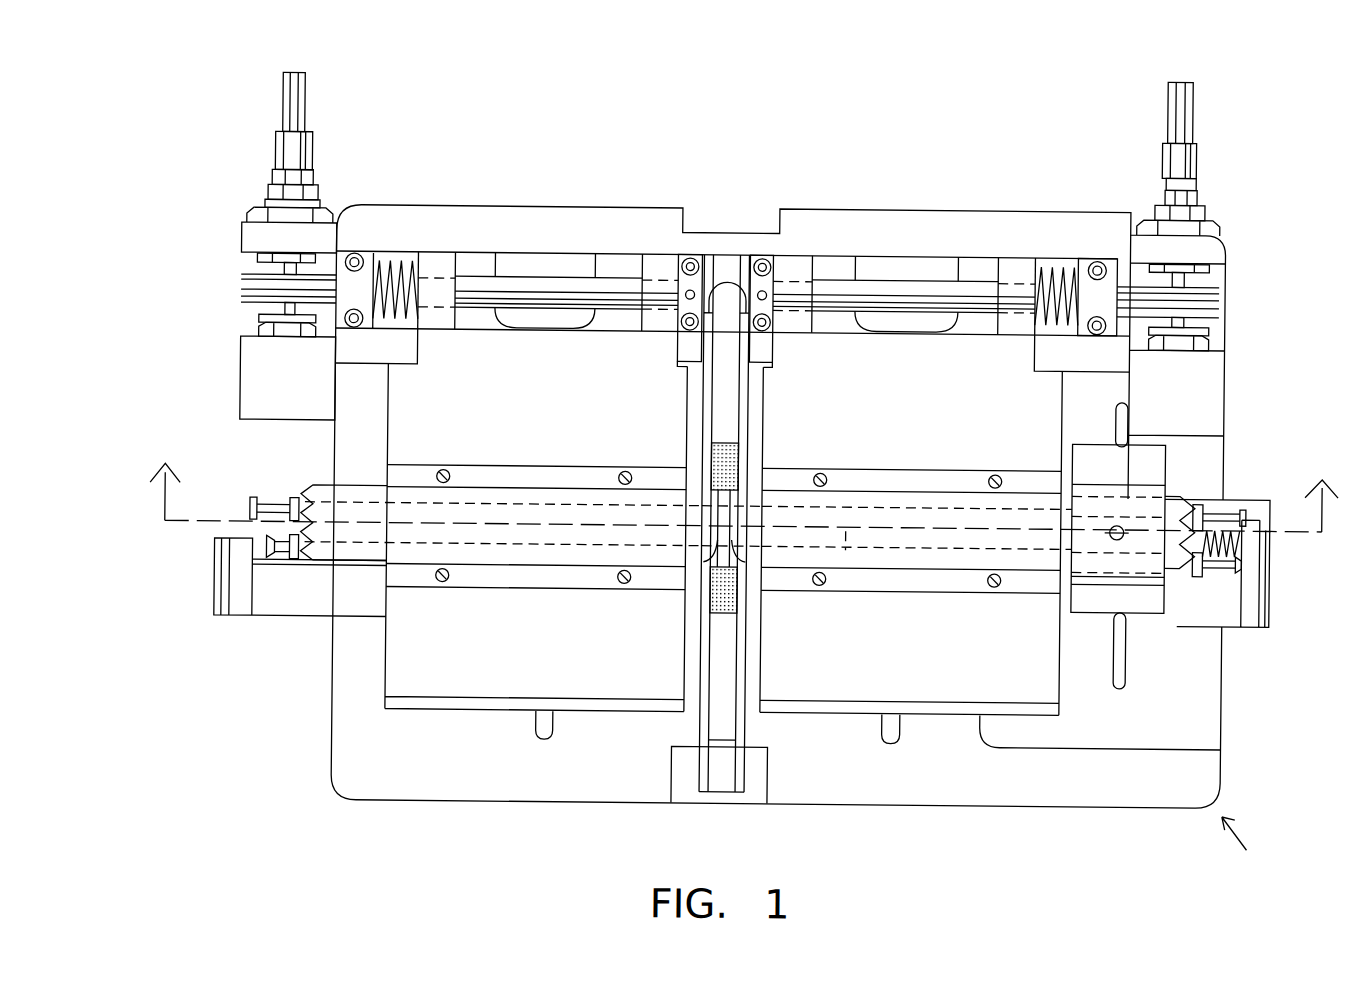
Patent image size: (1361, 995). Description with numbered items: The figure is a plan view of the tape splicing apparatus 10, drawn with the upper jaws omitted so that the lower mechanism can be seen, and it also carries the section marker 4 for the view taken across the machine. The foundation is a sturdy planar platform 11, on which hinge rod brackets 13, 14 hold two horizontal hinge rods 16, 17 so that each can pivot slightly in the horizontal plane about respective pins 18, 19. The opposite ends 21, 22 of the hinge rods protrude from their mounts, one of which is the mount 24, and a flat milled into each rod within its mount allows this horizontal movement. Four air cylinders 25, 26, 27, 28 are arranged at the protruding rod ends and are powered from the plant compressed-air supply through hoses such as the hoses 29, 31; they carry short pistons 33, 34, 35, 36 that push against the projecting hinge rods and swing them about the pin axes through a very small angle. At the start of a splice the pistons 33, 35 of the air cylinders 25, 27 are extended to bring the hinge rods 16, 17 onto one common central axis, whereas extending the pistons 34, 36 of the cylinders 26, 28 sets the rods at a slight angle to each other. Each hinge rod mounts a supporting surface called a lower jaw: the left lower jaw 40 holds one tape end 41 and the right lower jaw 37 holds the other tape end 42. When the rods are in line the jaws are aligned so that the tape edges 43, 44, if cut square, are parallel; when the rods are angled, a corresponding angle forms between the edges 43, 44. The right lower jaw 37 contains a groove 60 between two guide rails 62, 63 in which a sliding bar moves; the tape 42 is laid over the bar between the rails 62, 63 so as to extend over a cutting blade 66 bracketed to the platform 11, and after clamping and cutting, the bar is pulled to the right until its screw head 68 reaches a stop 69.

The section line 4- 4 is at (744, 481).
The apparatus 10 is at (1248, 846).
The platform 11 is at (1078, 797).
The hinge rod bracket 13 is at (688, 341).
The hinge rod bracket 14 is at (764, 347).
The hinge rod 16 is at (553, 287).
The hinge rod 17 is at (918, 280).
The pin 18 is at (683, 294).
The pin 19 is at (765, 292).
The end of hinge rod 21 is at (258, 289).
The end of hinge rod 22 is at (1204, 293).
The mount 24 is at (1120, 276).
The air cylinder 25 is at (249, 238).
The air cylinder 26 is at (248, 360).
The air cylinder 27 is at (1209, 242).
The air cylinder 28 is at (1210, 388).
The hose 29 is at (285, 111).
The hose 31 is at (1186, 124).
The piston 33 is at (285, 273).
The piston 34 is at (258, 312).
The piston 35 is at (1184, 272).
The piston 36 is at (1184, 320).
The lower jaw 37 is at (876, 422).
The lower jaw 40 is at (528, 421).
The tape end 41 is at (532, 482).
The tape end 42 is at (898, 498).
The edge 43 is at (716, 545).
The edge 44 is at (733, 545).
The groove 60 is at (846, 549).
The guide rail 62 is at (920, 476).
The guide rail 63 is at (916, 586).
The cutting blade 66 is at (702, 727).
The screw head 68 is at (1238, 570).
The stop 69 is at (1237, 572).